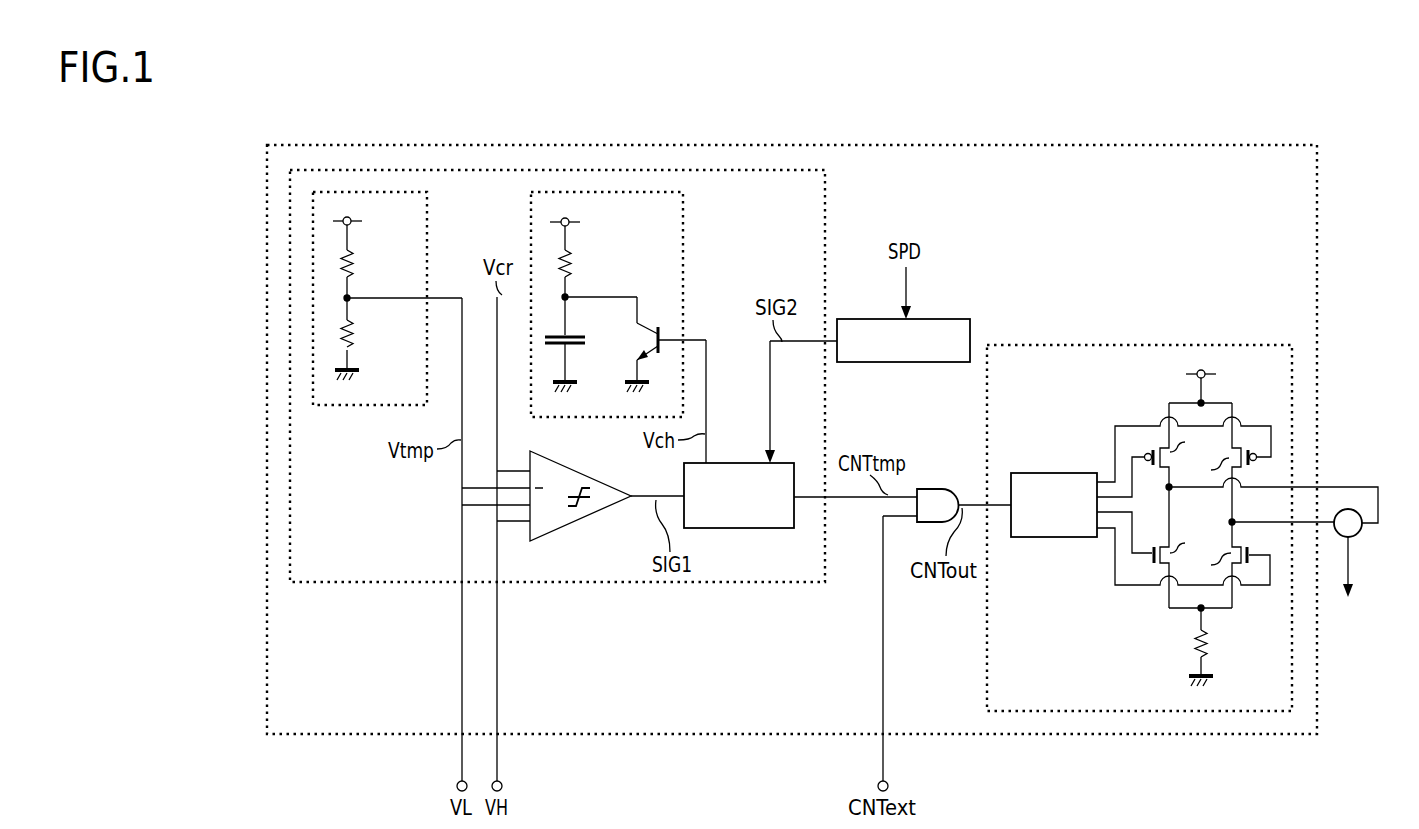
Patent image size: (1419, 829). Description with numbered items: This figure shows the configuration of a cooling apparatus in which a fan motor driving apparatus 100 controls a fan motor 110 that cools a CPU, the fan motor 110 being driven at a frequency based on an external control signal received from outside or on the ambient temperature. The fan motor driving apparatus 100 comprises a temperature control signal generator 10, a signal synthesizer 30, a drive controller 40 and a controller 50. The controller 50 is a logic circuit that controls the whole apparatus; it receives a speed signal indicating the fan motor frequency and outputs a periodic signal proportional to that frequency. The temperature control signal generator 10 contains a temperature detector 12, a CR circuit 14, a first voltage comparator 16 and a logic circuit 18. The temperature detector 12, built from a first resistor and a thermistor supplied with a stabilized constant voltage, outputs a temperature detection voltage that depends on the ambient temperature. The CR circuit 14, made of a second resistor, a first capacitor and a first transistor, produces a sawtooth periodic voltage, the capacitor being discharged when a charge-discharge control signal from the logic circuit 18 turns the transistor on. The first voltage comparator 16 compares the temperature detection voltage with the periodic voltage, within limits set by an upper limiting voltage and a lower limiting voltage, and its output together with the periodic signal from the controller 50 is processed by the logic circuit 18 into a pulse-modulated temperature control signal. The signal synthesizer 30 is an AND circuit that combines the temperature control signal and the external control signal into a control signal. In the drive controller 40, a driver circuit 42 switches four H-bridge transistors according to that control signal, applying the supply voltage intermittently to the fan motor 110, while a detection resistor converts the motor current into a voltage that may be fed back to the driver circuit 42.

The fan motor driving apparatus 100 is at (1100, 734).
The temperature control signal generator 10 is at (826, 190).
The temperature detector 12 is at (428, 214).
The CR circuit 14 is at (684, 214).
The first voltage comparator 16 is at (582, 519).
The logic circuit 18 is at (737, 529).
The signal synthesizer 30 is at (943, 488).
The drive controller 40 is at (1141, 345).
The driver circuit 42 is at (1050, 538).
The controller 50 is at (908, 363).
The fan motor 110 is at (1359, 533).